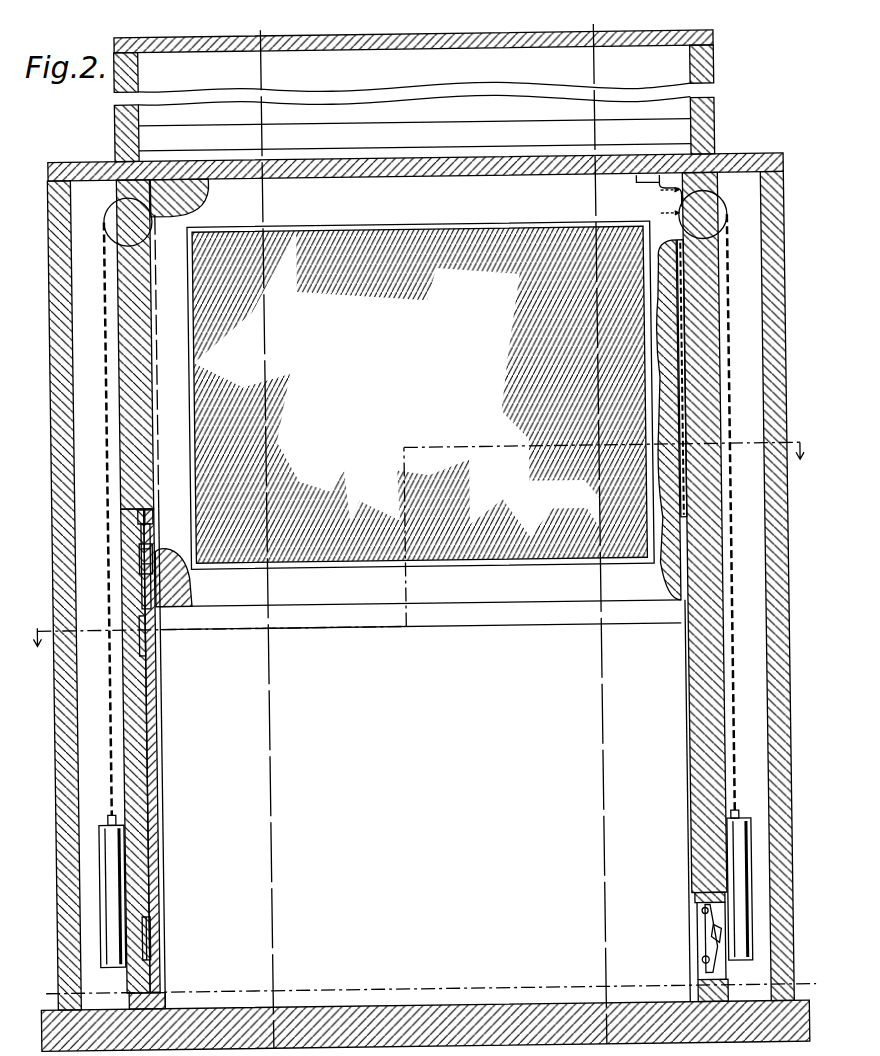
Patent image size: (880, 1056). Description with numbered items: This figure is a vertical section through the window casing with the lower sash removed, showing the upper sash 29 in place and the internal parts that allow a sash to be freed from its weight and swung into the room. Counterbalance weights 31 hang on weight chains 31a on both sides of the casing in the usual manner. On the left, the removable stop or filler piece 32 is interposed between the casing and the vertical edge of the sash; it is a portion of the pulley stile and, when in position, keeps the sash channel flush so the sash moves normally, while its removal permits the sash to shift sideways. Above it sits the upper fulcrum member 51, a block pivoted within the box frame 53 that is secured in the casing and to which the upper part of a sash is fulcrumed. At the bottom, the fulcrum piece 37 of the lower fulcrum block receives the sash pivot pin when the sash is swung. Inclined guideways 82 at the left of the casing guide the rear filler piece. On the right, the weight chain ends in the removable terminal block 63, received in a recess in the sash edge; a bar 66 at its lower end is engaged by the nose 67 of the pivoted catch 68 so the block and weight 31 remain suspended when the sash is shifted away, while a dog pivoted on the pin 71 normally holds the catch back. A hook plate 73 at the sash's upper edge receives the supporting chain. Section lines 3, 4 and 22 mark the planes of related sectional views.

The section line 3— 3 is at (248, 26).
The section line 4— 4 is at (607, 24).
The section line 22— 22 is at (45, 994).
The upper sash 29 is at (359, 600).
The counterbalance weight 31 is at (122, 848).
The weight chain 31a is at (108, 711).
The removable stop or filler piece 32 is at (150, 758).
The fulcrum piece 37 is at (160, 988).
The upper fulcrum member 51 is at (148, 536).
The box frame 53 is at (138, 551).
The terminal block 63 is at (691, 429).
The bar 66 is at (686, 540).
The nose 67 is at (700, 938).
The catch 68 is at (703, 920).
The pin 71 is at (700, 966).
The hook plate 73 is at (690, 152).
The guideway 82 is at (158, 620).